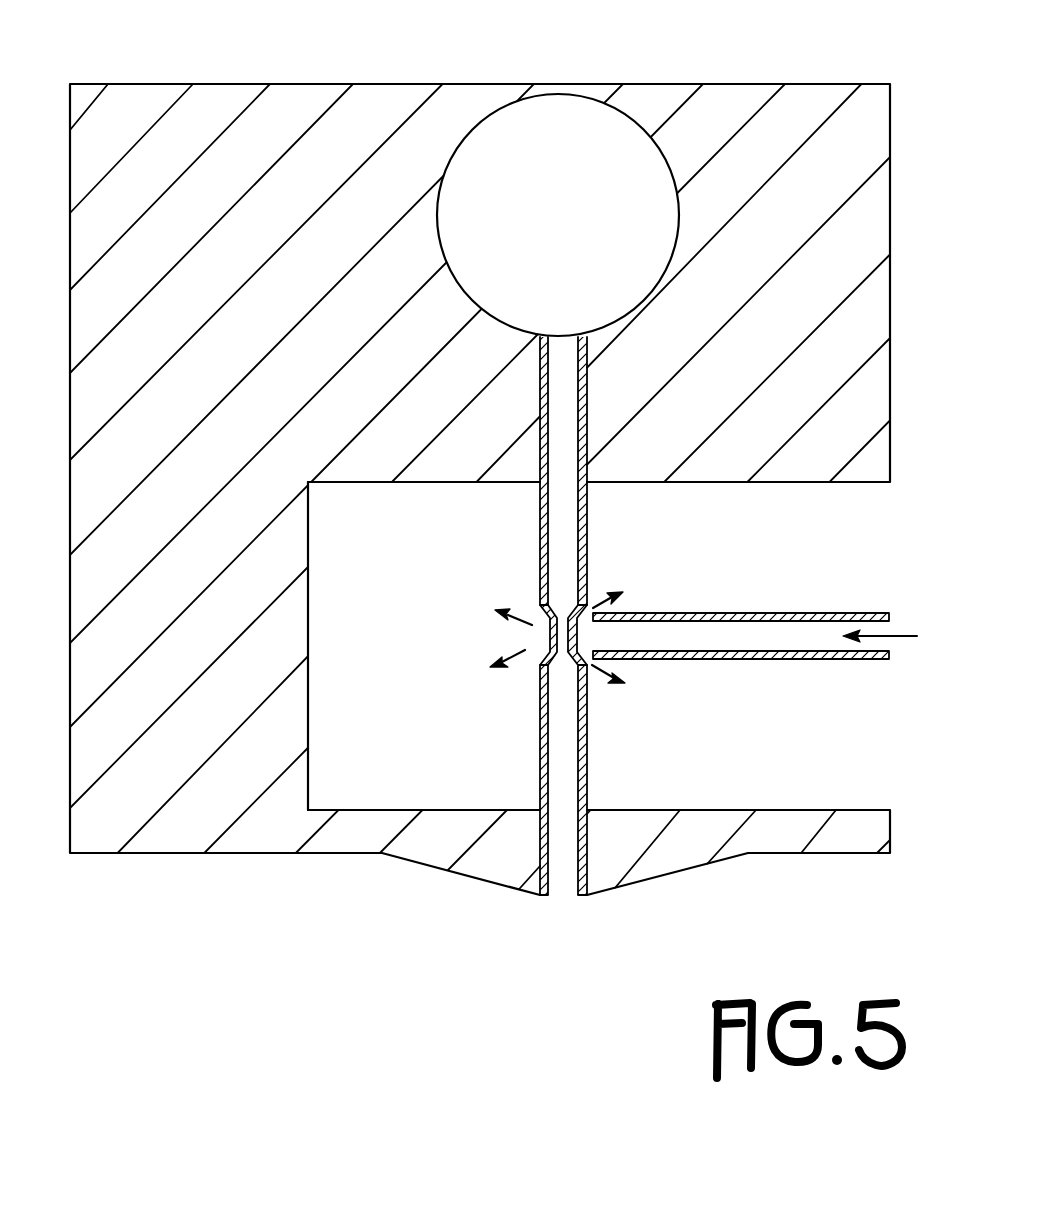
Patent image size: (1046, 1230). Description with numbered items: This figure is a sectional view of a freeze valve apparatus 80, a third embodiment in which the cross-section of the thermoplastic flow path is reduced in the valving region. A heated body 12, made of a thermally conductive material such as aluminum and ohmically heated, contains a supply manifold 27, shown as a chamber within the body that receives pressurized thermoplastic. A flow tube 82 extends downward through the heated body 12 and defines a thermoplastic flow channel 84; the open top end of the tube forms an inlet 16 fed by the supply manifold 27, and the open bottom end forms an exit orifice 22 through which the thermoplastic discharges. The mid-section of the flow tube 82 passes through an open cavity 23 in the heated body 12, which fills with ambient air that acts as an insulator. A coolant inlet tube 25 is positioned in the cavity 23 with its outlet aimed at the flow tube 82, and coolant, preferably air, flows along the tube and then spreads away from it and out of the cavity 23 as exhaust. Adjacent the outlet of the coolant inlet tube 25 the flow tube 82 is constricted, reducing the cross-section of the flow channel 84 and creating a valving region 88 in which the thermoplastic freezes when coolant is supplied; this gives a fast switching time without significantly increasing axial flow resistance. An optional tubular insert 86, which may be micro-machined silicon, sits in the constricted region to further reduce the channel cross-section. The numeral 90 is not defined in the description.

The heated body 12 is at (165, 420).
The inlet 16 is at (584, 622).
The exit orifice 22 is at (565, 885).
The cavity 23 is at (369, 530).
The coolant inlet tube 25 is at (845, 612).
The supply manifold 27 is at (512, 120).
The freeze valve apparatus 80 is at (798, 58).
The flow tube 82 is at (583, 897).
The thermoplastic flow channel 84 is at (563, 508).
The tubular insert 86 is at (545, 600).
The valving region 88 is at (577, 614).
The flow region 90 is at (590, 640).